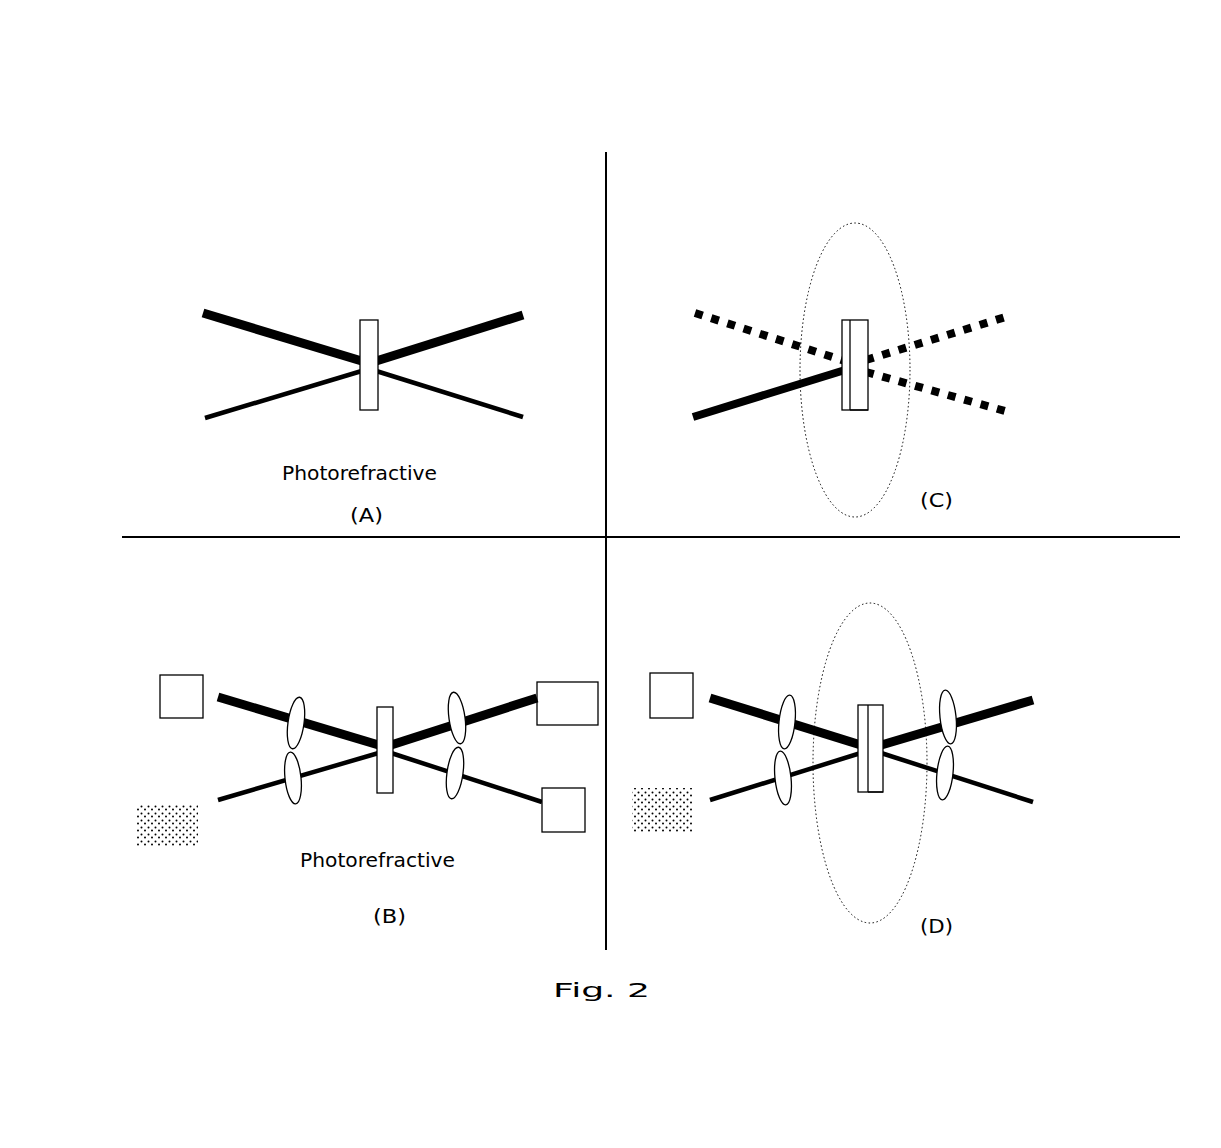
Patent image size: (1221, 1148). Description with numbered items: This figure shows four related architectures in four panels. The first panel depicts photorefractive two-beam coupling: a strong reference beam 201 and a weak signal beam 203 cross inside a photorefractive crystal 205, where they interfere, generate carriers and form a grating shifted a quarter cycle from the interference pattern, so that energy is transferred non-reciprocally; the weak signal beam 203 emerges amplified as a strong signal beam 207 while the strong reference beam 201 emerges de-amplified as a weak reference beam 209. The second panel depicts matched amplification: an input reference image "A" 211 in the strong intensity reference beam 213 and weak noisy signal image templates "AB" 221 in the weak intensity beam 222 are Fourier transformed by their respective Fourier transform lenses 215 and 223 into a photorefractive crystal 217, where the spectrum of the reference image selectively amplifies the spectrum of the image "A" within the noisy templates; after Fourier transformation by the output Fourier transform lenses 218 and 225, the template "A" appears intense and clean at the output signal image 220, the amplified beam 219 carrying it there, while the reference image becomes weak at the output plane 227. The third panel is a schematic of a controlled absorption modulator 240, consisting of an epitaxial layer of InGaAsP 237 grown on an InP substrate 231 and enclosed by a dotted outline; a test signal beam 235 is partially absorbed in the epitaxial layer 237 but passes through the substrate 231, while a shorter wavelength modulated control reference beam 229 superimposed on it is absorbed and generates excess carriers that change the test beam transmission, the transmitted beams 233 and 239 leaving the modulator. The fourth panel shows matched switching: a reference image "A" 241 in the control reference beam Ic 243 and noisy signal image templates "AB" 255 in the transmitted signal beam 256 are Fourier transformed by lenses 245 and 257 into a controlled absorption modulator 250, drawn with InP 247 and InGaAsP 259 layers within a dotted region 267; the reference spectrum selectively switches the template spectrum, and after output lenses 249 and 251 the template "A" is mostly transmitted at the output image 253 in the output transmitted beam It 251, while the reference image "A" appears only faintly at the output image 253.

The strong reference beam 201 is at (207, 308).
The weak signal beam 203 is at (205, 422).
The photorefractive crystal 205 is at (370, 410).
The strong signal beam 207 is at (518, 312).
The weak reference beam 209 is at (513, 423).
The reference image "A" 211 is at (172, 692).
The strong intensity reference beam 213 is at (237, 697).
The Fourier transform lens 215 is at (298, 700).
The photorefractive crystal 217 is at (382, 793).
The output Fourier transform lens 218 is at (457, 692).
The output reference beam 219 is at (532, 697).
The output signal image 220 is at (567, 688).
The noisy signal image templates "AB" 221 is at (160, 807).
The weak intensity beam 222 is at (230, 807).
The Fourier transform lens 223 is at (297, 805).
The output Fourier transform lens 225 is at (452, 803).
The output plane 227 is at (562, 827).
The control reference beam 229 is at (693, 309).
The InP substrate 231 is at (855, 323).
The transmitted control beam 233 is at (1010, 308).
The test signal beam 235 is at (693, 420).
The epitaxial layer of InGaAsP 237 is at (843, 410).
The transmitted control beam 239 is at (1012, 420).
The controlled absorption modulator 240 is at (987, 370).
The reference image "A" 241 is at (658, 703).
The control reference beam Ic 243 is at (715, 690).
The Fourier transform lens 245 is at (787, 700).
The InP layer 247 is at (873, 705).
The lens 249 is at (945, 692).
The controlled absorption modulator 250 is at (1013, 749).
The output transmitted beam It 251 is at (1015, 695).
The output image 253 is at (1050, 707).
The noisy signal image templates "AB" 255 is at (658, 788).
The transmitted signal beam 256 is at (728, 798).
The Fourier transform lens 257 is at (787, 808).
The InGaAsP layer 259 is at (860, 792).
The modulator region 267 is at (873, 605).